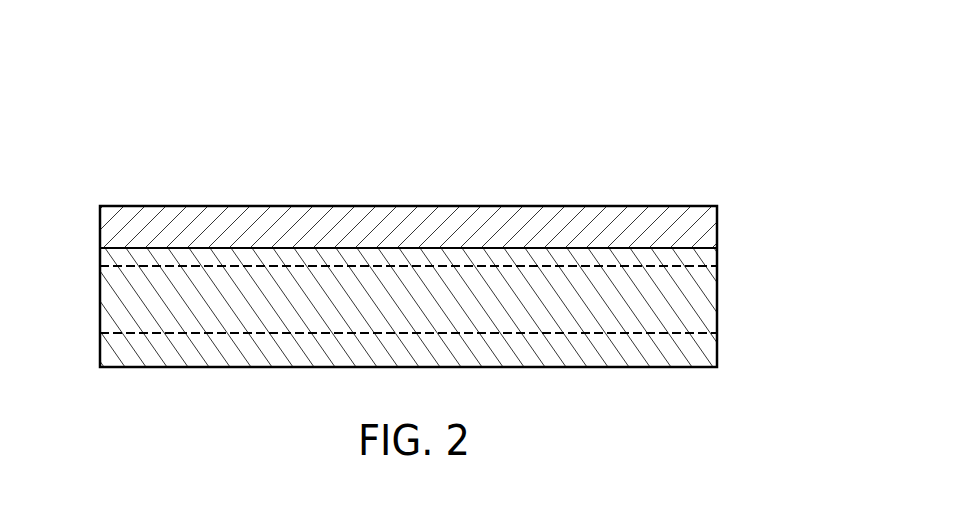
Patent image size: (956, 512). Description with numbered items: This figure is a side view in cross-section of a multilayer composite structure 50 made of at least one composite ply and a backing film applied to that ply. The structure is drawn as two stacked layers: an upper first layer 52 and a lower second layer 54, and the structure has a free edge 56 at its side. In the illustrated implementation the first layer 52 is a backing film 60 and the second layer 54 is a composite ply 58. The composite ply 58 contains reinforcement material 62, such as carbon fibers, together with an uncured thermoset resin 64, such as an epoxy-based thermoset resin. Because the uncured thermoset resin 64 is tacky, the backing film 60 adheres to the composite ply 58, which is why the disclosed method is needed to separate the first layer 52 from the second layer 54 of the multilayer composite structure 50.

The multilayer composite structure 50 is at (677, 142).
The first layer 52 is at (415, 227).
The second layer 54 is at (409, 335).
The free edge 56 is at (719, 331).
The composite ply 58 is at (427, 314).
The backing film 60 is at (427, 241).
The reinforcement material 62 is at (434, 344).
The uncured thermoset resin 64 is at (636, 316).